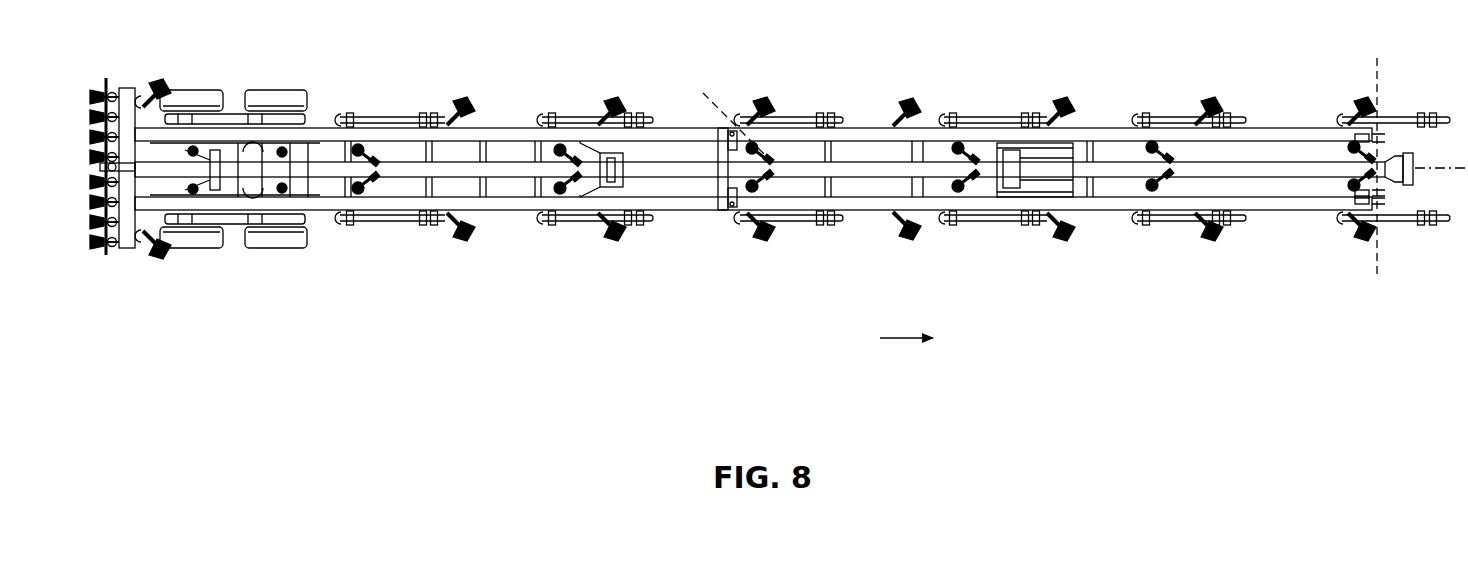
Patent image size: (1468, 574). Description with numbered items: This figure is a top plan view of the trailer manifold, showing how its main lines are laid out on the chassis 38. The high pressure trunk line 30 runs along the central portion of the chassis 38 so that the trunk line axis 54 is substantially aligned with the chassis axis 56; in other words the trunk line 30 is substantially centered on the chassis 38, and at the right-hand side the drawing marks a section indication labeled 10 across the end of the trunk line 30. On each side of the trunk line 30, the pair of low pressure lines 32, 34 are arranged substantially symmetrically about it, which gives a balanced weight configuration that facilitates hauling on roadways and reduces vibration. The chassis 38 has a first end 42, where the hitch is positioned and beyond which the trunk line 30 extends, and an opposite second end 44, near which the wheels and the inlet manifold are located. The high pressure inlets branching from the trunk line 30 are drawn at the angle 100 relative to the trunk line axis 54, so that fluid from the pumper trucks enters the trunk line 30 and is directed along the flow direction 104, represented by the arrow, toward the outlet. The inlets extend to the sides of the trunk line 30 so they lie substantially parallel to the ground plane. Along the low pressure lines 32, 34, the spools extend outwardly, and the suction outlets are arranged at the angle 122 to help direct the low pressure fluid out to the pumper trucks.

The section view line 10- 10 is at (1377, 58).
The high pressure trunk line 30 is at (1305, 170).
The low pressure line 32 is at (1105, 208).
The low pressure line 34 is at (1083, 130).
The chassis 38 is at (686, 72).
The first end 42 is at (1066, 297).
The second end 44 is at (195, 61).
The trunk line axis 54 is at (1445, 160).
The chassis axis 56 is at (1430, 172).
The angle 100 is at (712, 103).
The downstream direction 104 is at (900, 340).
The angle 122 is at (893, 130).